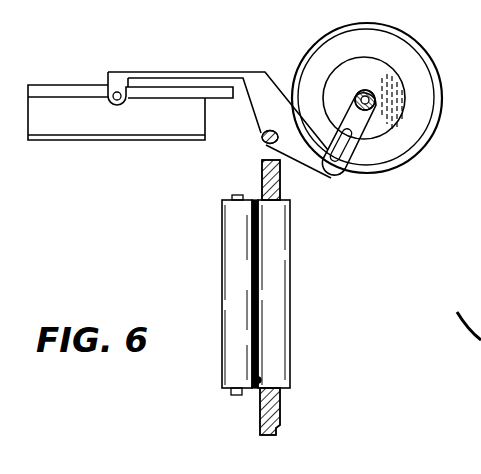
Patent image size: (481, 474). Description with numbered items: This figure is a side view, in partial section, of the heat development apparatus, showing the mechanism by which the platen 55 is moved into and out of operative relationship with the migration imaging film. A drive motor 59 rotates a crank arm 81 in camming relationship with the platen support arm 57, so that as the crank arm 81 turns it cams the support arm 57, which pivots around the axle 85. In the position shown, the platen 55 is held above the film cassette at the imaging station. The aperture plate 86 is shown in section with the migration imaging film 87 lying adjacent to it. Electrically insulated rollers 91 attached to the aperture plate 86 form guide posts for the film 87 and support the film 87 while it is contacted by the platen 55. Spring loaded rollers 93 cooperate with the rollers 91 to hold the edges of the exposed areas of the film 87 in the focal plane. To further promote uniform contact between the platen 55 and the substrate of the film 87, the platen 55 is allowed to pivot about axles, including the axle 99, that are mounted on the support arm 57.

The platen 55 is at (119, 128).
The platen support arm 57 is at (253, 83).
The drive motor 59 is at (425, 48).
The crank arm 81 is at (389, 165).
The axle 85 is at (260, 130).
The aperture plate 86 is at (280, 177).
The migration imaging film 87 is at (255, 390).
The electrically insulated rollers 91 is at (277, 286).
The spring loaded rollers 93 is at (230, 305).
The axle 99 is at (113, 92).